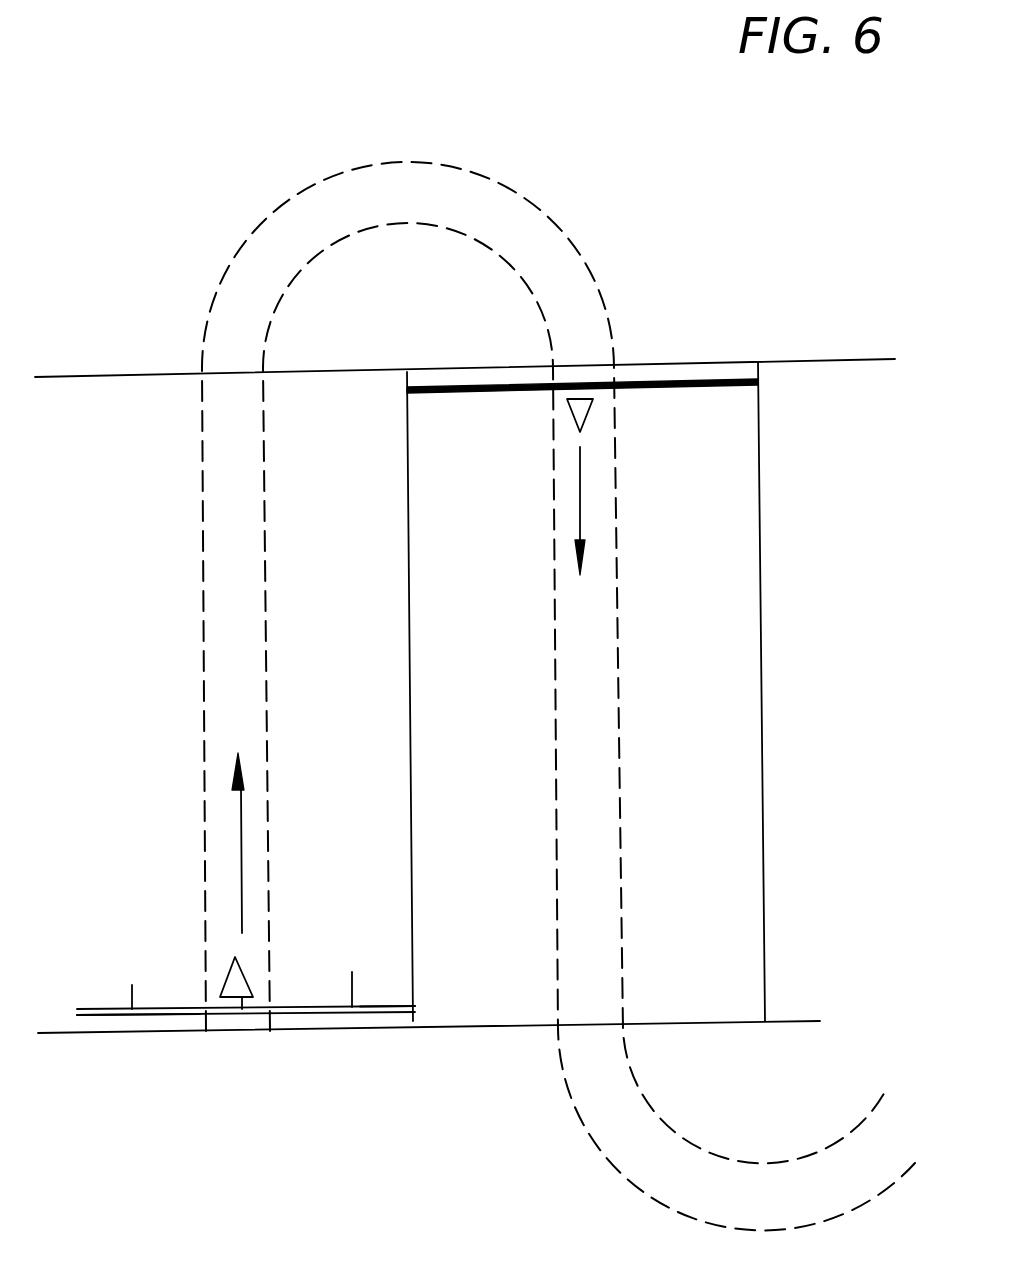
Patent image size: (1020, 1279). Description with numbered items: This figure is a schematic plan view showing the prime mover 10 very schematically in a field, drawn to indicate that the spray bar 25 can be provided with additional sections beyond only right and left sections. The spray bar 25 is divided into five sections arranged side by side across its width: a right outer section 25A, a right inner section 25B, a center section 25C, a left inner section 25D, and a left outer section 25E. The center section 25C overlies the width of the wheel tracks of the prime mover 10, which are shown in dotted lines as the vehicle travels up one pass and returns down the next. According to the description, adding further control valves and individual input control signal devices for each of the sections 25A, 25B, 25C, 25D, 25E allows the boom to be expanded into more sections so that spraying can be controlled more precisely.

The prime mover 10 is at (258, 956).
The spray bar 25 is at (340, 1020).
The right outer section 25A is at (395, 1007).
The right inner section 25B is at (348, 1007).
The center section 25C is at (238, 997).
The left inner section 25D is at (148, 1007).
The left outer section 25E is at (91, 1025).